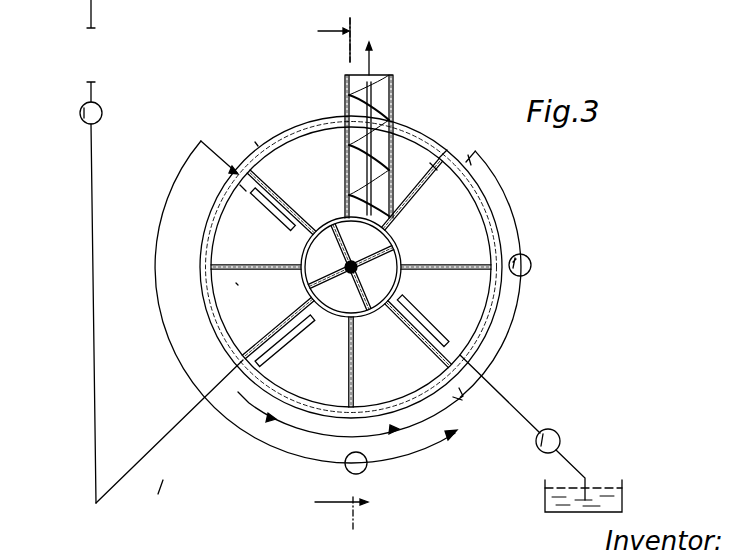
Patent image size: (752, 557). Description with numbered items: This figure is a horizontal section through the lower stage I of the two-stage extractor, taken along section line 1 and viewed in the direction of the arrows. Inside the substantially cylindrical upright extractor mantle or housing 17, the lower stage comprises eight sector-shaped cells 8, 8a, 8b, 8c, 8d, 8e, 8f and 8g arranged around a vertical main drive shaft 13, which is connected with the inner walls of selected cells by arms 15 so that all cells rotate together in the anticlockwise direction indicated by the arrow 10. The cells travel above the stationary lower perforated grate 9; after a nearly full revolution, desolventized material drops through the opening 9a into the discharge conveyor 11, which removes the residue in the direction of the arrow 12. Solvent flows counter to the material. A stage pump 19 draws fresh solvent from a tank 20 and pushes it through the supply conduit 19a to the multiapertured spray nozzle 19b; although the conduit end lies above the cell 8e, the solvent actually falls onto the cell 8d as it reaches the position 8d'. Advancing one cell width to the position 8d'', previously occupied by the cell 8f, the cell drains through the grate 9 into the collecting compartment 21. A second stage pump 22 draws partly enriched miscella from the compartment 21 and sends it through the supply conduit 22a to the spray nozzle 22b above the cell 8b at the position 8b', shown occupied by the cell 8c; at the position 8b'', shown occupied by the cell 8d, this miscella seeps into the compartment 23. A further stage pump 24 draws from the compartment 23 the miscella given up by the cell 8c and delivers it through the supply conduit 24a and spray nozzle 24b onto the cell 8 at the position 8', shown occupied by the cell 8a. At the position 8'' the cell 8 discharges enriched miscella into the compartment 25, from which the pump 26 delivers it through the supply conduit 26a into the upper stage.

The section line 1 is at (341, 274).
The arrow 10 is at (320, 502).
The lower stage I is at (153, 497).
The cell 8 is at (351, 256).
The cell position 8' is at (221, 180).
The cell position 8'' is at (204, 295).
The cell 8a is at (214, 230).
The cell 8b is at (244, 328).
The cell position 8b' is at (287, 433).
The cell position 8b'' is at (433, 428).
The cell 8c is at (283, 375).
The cell 8d is at (418, 394).
The cell position 8d' is at (519, 294).
The cell position 8d'' is at (526, 232).
The cell 8e is at (474, 310).
The cell 8f is at (468, 227).
The cell 8g is at (383, 161).
The lower perforated grate 9 is at (445, 163).
The opening 9a is at (433, 167).
The discharge conveyor 11 is at (393, 84).
The arrow 12 is at (374, 67).
The vertical main drive shaft 13 is at (352, 261).
The arms 15 is at (358, 296).
The extractor mantle or housing 17 is at (256, 142).
The stage pump 19 is at (560, 432).
The supply conduit 19a is at (508, 398).
The multiapertured spray nozzle 19b is at (408, 304).
The tank 20 is at (545, 505).
The collecting receptacle or compartment 21 is at (488, 190).
The second stage pump 22 is at (532, 266).
The supply conduit 22a is at (452, 410).
The spray nozzle 22b is at (299, 339).
The compartment 23 is at (481, 408).
The stage pump 24 is at (365, 470).
The supply conduit 24a is at (176, 352).
The spray nozzle 24b is at (290, 223).
The compartment 25 is at (242, 368).
The pump 26 is at (80, 117).
The supply conduit 26a is at (93, 286).